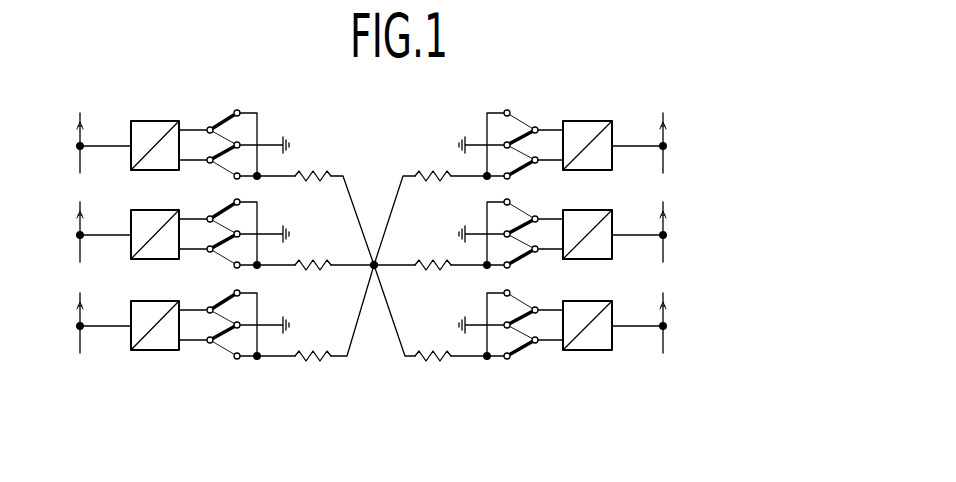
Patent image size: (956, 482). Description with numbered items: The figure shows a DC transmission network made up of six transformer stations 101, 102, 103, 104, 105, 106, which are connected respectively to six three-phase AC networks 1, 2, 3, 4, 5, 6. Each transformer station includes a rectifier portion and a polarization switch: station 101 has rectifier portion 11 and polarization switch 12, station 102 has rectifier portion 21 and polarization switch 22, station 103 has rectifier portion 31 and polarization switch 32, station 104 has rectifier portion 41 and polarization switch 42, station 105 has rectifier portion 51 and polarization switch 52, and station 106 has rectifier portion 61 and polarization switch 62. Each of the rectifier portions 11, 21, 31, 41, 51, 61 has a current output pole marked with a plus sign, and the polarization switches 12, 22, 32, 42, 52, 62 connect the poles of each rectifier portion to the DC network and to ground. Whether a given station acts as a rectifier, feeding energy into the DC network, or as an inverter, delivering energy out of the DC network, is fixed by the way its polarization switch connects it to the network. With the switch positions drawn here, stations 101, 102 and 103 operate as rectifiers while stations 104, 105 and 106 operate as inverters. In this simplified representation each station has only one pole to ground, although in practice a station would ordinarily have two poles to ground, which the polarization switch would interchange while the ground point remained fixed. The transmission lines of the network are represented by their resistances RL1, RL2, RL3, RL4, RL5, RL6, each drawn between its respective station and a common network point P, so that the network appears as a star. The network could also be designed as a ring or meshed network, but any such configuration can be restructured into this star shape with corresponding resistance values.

The three-phase network 1 is at (80, 157).
The three-phase network 2 is at (80, 246).
The three-phase network 3 is at (80, 337).
The three-phase network 4 is at (664, 158).
The three-phase network 5 is at (664, 247).
The three-phase network 6 is at (664, 338).
The rectifier portion 11 is at (158, 117).
The polarization switch 12 is at (229, 113).
The rectifier portion 21 is at (165, 197).
The polarization switch 22 is at (224, 208).
The rectifier portion 31 is at (167, 289).
The polarization switch 32 is at (227, 300).
The rectifier portion 41 is at (597, 119).
The polarization switch 42 is at (530, 122).
The rectifier portion 51 is at (601, 209).
The polarization switch 52 is at (520, 190).
The rectifier portion 61 is at (601, 302).
The polarization switch 62 is at (520, 283).
The transformer station 101 is at (193, 93).
The transformer station 102 is at (193, 199).
The transformer station 103 is at (197, 286).
The transformer station 104 is at (571, 91).
The transformer station 105 is at (575, 192).
The transformer station 106 is at (575, 286).
The common network point P is at (377, 269).
The transmission line resistance RL1 is at (314, 157).
The transmission line resistance RL2 is at (314, 251).
The transmission line resistance RL3 is at (314, 339).
The transmission line resistance RL4 is at (429, 157).
The transmission line resistance RL5 is at (429, 251).
The transmission line resistance RL6 is at (429, 339).